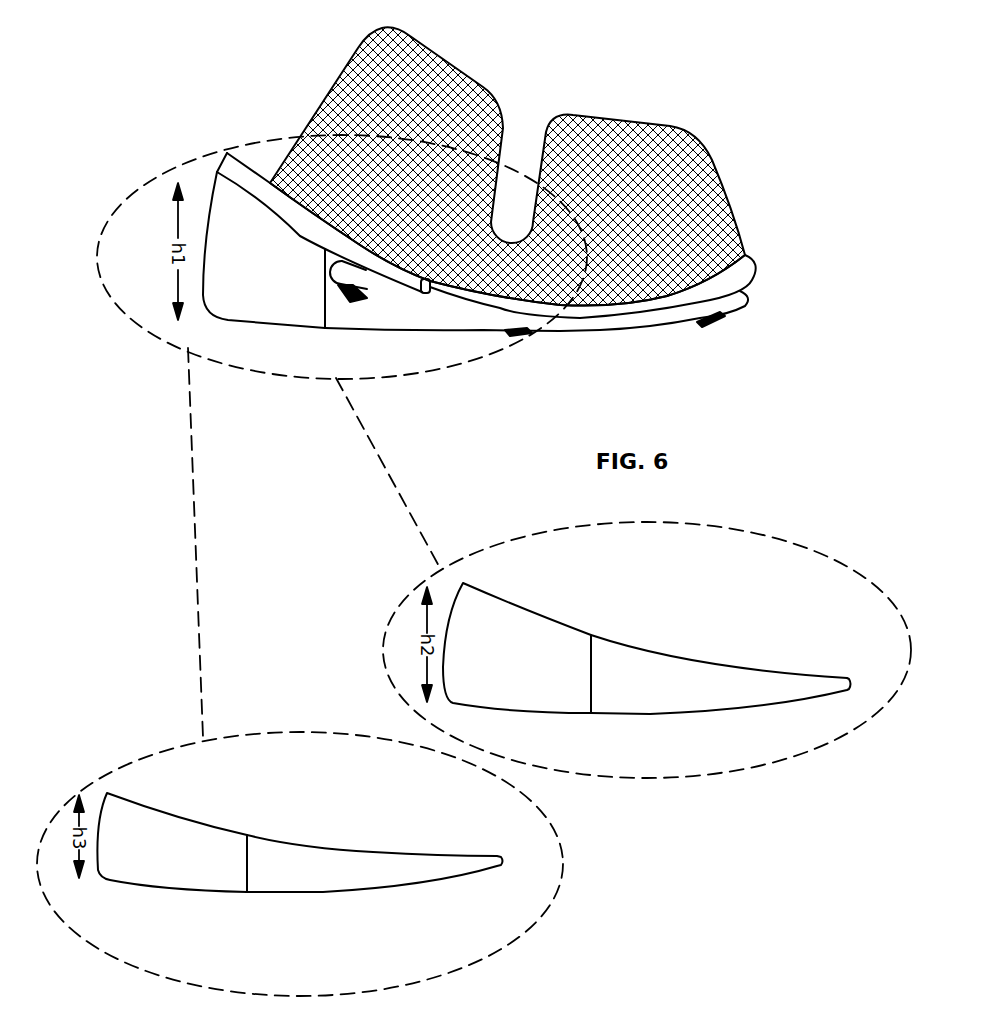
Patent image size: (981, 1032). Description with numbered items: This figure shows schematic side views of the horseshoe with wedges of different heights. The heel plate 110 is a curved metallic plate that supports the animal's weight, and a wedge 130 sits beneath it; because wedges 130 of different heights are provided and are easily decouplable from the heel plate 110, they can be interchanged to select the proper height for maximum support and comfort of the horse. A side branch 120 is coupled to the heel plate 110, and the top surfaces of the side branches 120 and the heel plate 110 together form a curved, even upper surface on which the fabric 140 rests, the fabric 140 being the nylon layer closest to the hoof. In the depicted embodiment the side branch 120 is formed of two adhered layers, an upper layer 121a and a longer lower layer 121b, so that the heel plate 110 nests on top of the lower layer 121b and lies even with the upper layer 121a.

The heel plate 110 is at (227, 153).
The side branch 120 is at (579, 320).
The upper layer 121a is at (735, 275).
The lower layer 121b is at (733, 299).
The wedge 130 is at (250, 310).
The fabric 140 is at (722, 231).